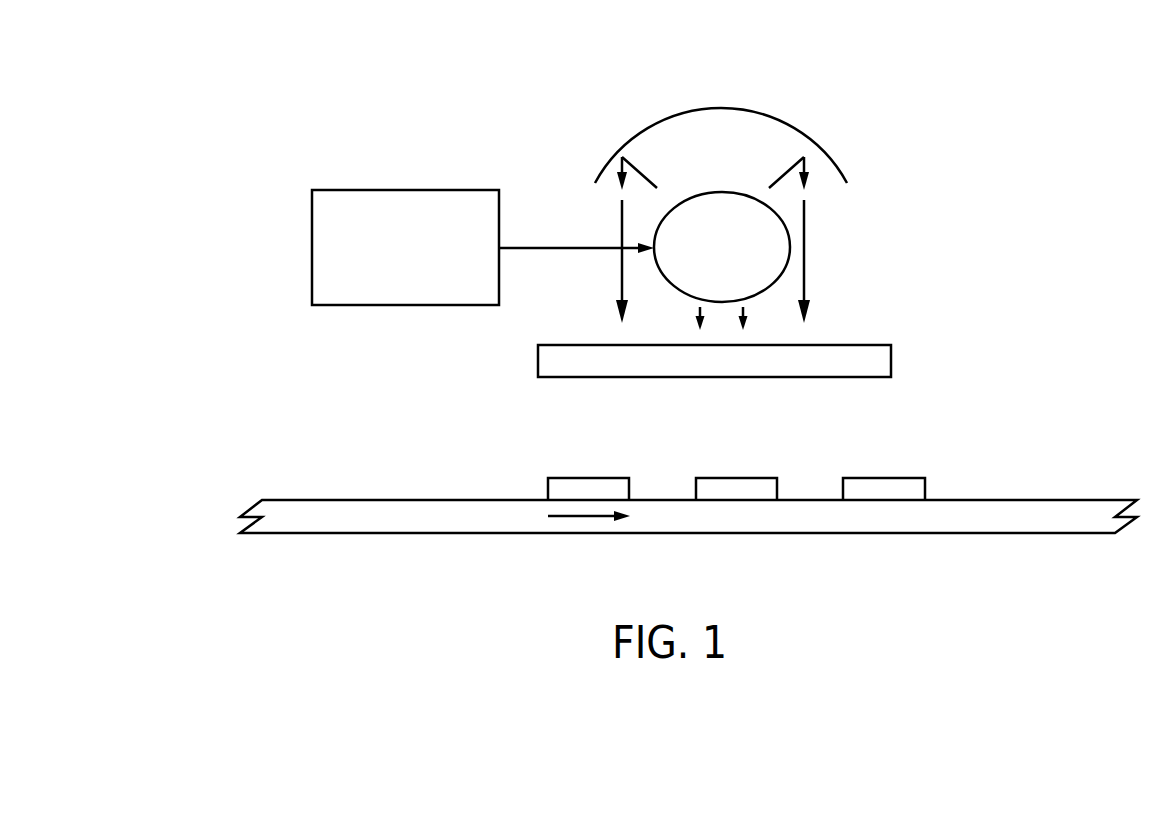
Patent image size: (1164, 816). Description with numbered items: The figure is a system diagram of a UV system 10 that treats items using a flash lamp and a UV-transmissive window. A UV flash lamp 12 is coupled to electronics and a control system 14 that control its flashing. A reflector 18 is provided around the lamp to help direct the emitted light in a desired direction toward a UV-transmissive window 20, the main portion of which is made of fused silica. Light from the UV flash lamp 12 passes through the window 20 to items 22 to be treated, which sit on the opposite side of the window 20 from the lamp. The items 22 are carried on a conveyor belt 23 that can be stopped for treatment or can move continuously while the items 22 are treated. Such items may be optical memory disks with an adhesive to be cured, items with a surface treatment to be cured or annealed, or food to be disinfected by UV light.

The UV system 10 is at (554, 118).
The UV flash lamp 12 is at (790, 247).
The control system 14 is at (312, 248).
The reflector 18 is at (830, 155).
The UV-transmissive window 20 is at (891, 361).
The items 22 is at (629, 478).
The conveyor belt 23 is at (1090, 500).